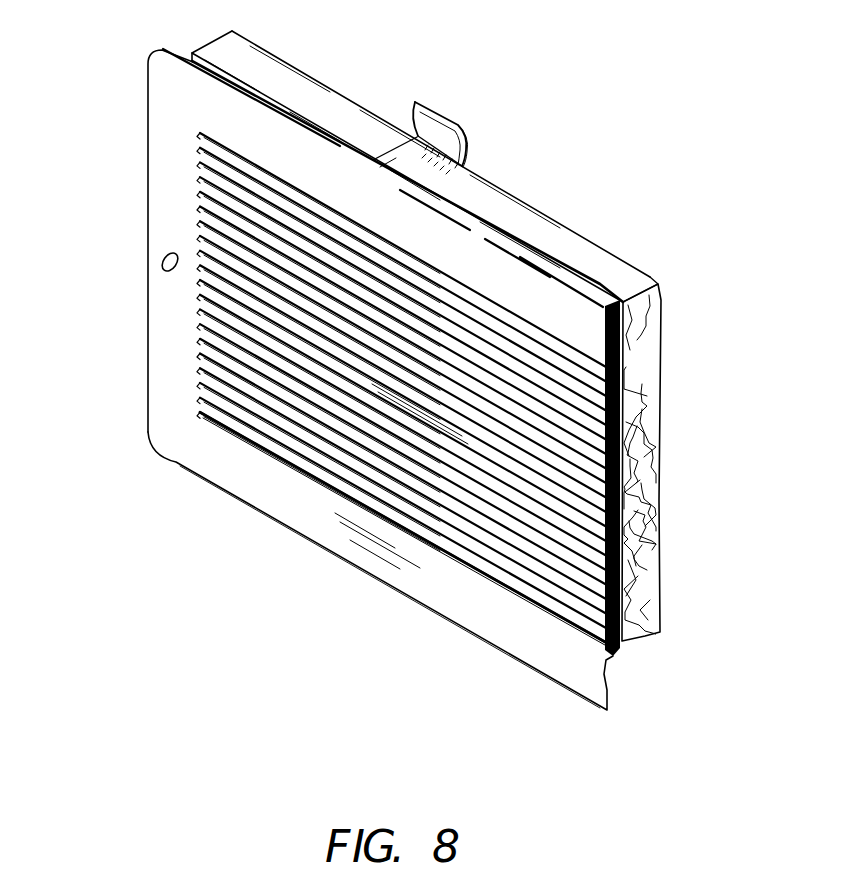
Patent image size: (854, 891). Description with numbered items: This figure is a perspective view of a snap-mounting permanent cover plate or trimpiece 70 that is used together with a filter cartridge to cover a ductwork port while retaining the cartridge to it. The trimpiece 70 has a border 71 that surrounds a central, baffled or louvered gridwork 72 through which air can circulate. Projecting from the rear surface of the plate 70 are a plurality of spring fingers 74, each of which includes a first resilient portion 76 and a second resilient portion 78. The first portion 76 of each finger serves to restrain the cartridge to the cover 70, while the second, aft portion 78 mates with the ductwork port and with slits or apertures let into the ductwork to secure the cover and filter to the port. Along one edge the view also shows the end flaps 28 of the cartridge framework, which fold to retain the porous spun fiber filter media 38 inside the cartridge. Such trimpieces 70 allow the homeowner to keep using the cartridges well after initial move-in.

The end flaps 28 is at (523, 220).
The filter media 38 is at (660, 562).
The trimpiece 70 is at (198, 477).
The border 71 is at (165, 355).
The louvered gridwork 72 is at (312, 450).
The spring fingers 74 is at (448, 122).
The first resilient portion 76 is at (381, 158).
The second resilient portion 78 is at (467, 162).